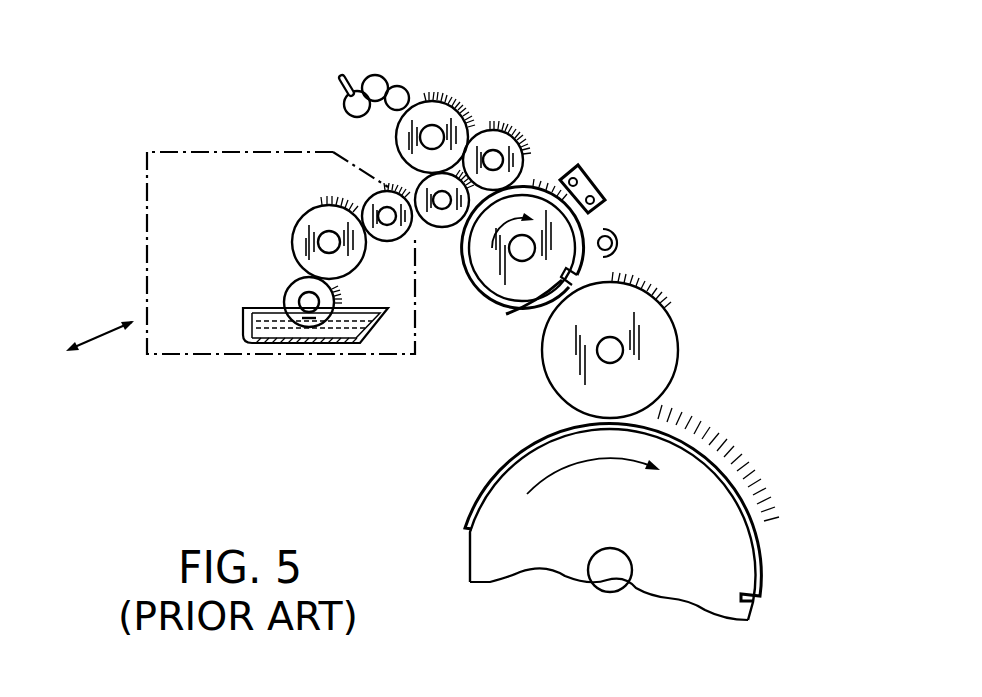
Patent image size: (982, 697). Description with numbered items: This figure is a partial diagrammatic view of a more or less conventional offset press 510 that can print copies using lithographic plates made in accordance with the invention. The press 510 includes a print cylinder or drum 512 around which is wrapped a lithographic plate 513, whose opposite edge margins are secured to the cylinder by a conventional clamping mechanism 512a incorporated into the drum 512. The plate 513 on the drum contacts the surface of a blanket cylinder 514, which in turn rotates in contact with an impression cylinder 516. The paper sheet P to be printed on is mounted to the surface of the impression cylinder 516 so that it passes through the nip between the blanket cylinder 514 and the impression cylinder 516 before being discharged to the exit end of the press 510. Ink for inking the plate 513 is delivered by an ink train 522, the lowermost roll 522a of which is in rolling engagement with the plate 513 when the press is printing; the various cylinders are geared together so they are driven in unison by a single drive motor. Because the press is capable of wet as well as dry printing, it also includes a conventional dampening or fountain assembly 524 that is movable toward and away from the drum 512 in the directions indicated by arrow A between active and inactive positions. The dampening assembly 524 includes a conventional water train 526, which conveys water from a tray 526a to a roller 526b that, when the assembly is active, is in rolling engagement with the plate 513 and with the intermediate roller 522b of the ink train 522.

The offset press 510 is at (474, 78).
The print cylinder 512 is at (562, 222).
The clamping mechanism 512a is at (518, 308).
The lithographic plate 513 is at (471, 287).
The blanket cylinder 514 is at (676, 348).
The impression cylinder 516 is at (470, 544).
The ink train 522 is at (448, 72).
The lowermost roll 522a is at (510, 147).
The intermediate roller 522b is at (458, 118).
The dampening assembly 524 is at (144, 249).
The water train 526 is at (270, 267).
The tray 526a is at (245, 318).
The roller 526b is at (405, 178).
The arrow A is at (102, 333).
The paper sheet P is at (765, 500).